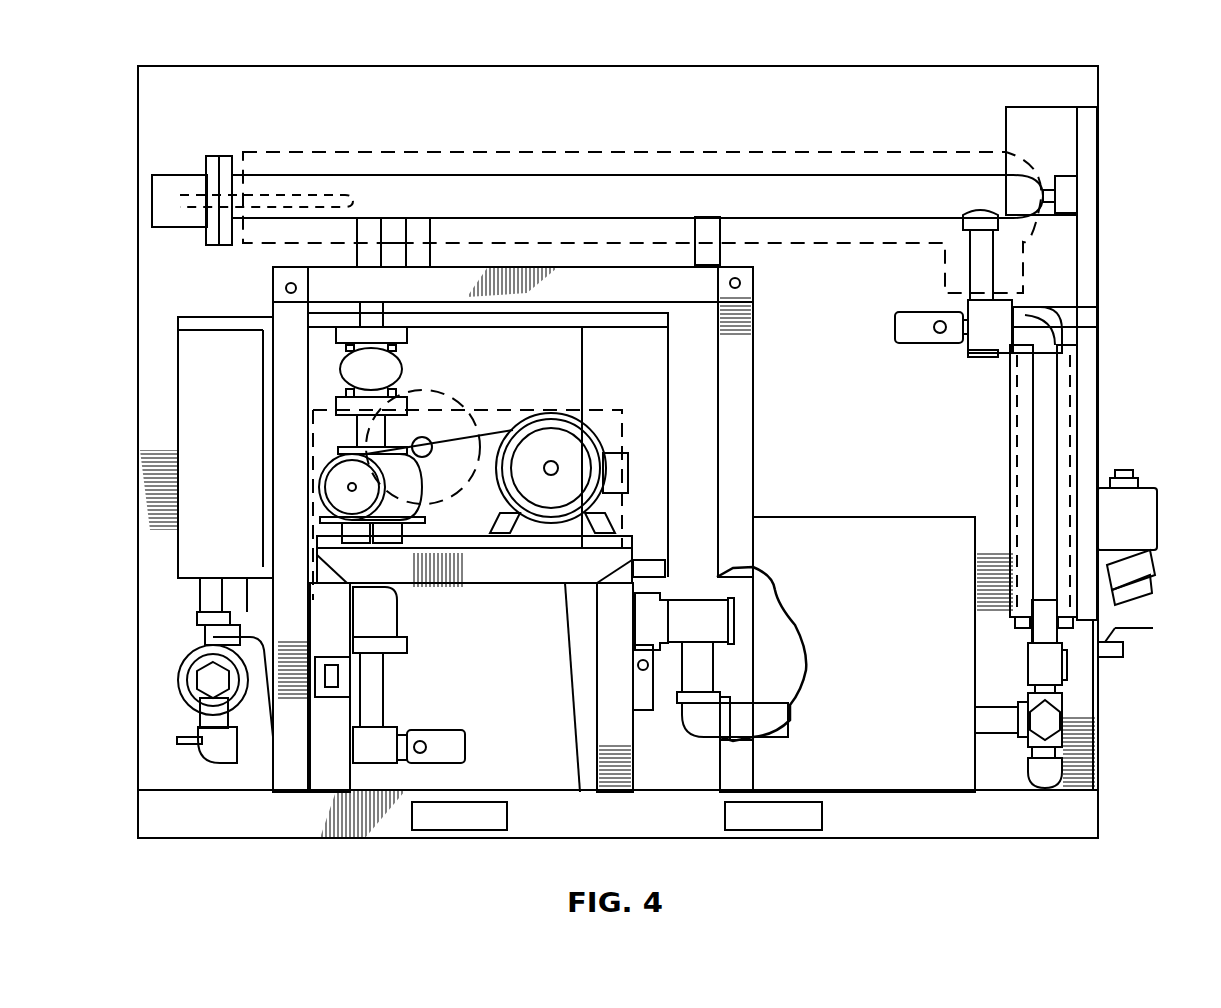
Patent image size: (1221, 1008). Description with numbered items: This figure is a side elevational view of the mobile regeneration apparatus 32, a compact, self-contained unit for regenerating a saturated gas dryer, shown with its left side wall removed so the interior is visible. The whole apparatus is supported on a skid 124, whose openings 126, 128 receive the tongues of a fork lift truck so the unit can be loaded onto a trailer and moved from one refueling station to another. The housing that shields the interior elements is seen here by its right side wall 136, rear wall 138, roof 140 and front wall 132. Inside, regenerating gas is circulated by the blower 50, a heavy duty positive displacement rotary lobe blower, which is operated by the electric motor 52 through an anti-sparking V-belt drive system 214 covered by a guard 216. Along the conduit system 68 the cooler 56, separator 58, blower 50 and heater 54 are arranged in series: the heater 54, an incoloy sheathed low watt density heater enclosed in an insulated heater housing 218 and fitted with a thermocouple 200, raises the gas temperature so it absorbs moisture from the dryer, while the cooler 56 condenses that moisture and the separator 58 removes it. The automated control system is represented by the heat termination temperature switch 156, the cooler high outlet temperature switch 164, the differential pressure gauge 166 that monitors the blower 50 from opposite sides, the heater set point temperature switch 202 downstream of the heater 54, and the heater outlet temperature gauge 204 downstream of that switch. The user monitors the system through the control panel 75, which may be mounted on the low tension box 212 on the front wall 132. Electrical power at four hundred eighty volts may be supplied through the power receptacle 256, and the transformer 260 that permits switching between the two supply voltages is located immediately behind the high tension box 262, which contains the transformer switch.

The mobile regeneration apparatus 32 is at (1140, 104).
The blower 50 is at (400, 483).
The electric motor 52 is at (595, 448).
The heater 54 is at (754, 145).
The cooler 56 is at (230, 458).
The separator 58 is at (178, 676).
The conduit system 68 is at (402, 370).
The control panel 75 is at (1097, 300).
The skid 124 is at (1098, 812).
The opening 126 is at (800, 820).
The opening 128 is at (442, 820).
The front wall 132 is at (1097, 730).
The right side wall 136 is at (224, 110).
The rear wall 138 is at (138, 332).
The roof 140 is at (138, 67).
The heat termination temperature switch 156 is at (640, 690).
The cooler high outlet temperature switch 164 is at (455, 730).
The differential pressure gauge 166 is at (370, 695).
The thermocouple 200 is at (330, 192).
The heater set point temperature switch 202 is at (1077, 196).
The heater outlet temperature gauge 204 is at (905, 348).
The low tension box 212 is at (1020, 120).
The anti-sparking V-belt drive system 214 is at (470, 430).
The guard 216 is at (622, 410).
The insulated heater housing 218 is at (565, 152).
The four hundred eighty volt power receptacle 256 is at (1150, 530).
The transformer 260 is at (903, 689).
The high tension box 262 is at (1085, 420).